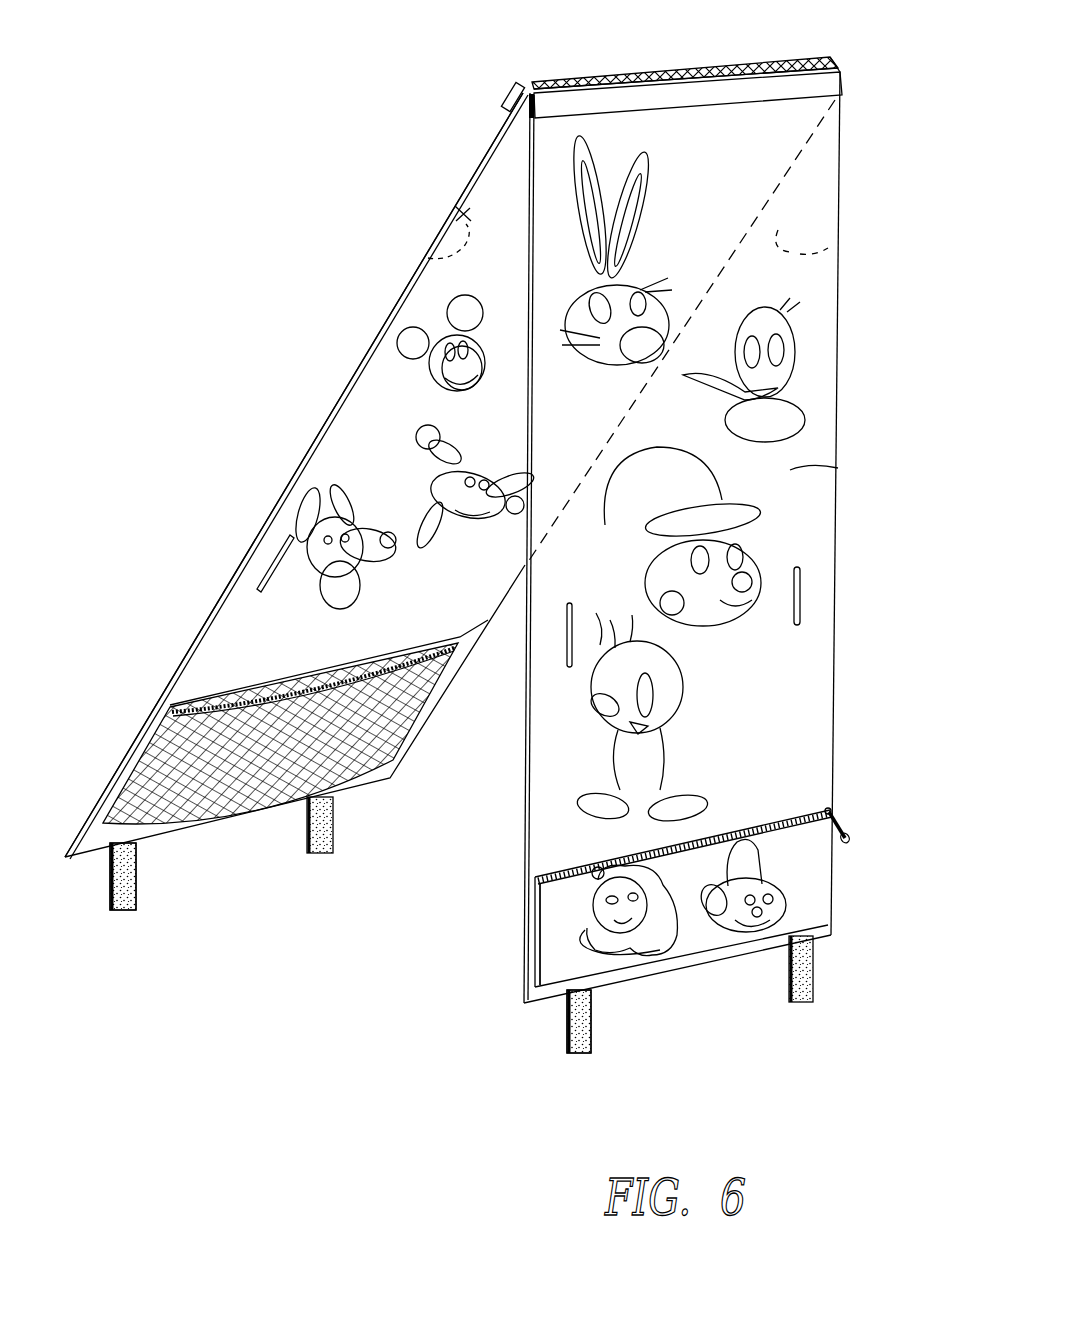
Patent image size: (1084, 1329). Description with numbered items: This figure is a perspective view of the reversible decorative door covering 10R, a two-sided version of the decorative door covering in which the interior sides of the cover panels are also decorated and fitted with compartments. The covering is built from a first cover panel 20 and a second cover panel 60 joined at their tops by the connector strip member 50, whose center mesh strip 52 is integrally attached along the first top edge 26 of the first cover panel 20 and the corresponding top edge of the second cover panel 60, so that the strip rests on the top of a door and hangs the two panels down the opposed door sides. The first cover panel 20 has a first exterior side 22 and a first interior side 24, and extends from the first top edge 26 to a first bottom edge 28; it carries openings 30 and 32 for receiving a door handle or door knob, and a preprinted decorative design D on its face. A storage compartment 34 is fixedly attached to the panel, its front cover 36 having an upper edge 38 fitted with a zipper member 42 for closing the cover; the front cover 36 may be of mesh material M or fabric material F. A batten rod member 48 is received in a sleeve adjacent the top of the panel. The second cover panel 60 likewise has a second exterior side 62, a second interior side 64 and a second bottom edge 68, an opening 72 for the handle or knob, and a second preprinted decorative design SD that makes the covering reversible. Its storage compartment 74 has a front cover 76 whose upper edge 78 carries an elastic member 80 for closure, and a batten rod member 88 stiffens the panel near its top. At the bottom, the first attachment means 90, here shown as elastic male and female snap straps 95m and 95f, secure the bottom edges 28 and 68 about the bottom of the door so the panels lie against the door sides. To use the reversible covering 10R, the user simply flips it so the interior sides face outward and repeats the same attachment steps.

The reversible decorative door covering 10R is at (292, 302).
The first cover panel 20 is at (840, 681).
The first exterior side 22 is at (838, 468).
The first interior side 24 is at (838, 256).
The first top edge 26 is at (750, 40).
The first bottom edge 28 is at (648, 975).
The opening 30 is at (798, 630).
The opening 32 is at (570, 603).
The storage compartment 34 is at (812, 880).
The front cover 36 is at (560, 952).
The upper edge 38 is at (773, 835).
The zipper member 42 is at (843, 812).
The batten rod member 48 is at (503, 98).
The connector strip member 50 is at (602, 65).
The center mesh strip 52 is at (696, 62).
The second cover panel 60 is at (296, 440).
The second exterior side 62 is at (425, 256).
The second interior side 64 is at (350, 437).
The second bottom edge 68 is at (272, 738).
The opening 72 is at (258, 596).
The storage compartment 74 is at (157, 758).
The front cover 76 is at (143, 783).
The upper edge 78 is at (360, 700).
The elastic member 80 is at (300, 692).
The batten rod member 88 is at (527, 118).
The first attachment means 90 is at (345, 836).
The elastic female snap strap 95f is at (318, 845).
The elastic male snap strap 95m is at (805, 1003).
The mesh material M is at (388, 782).
The second preprinted decorative design SD is at (452, 522).
The preprinted decorative design D is at (748, 535).
The fabric material F is at (722, 935).